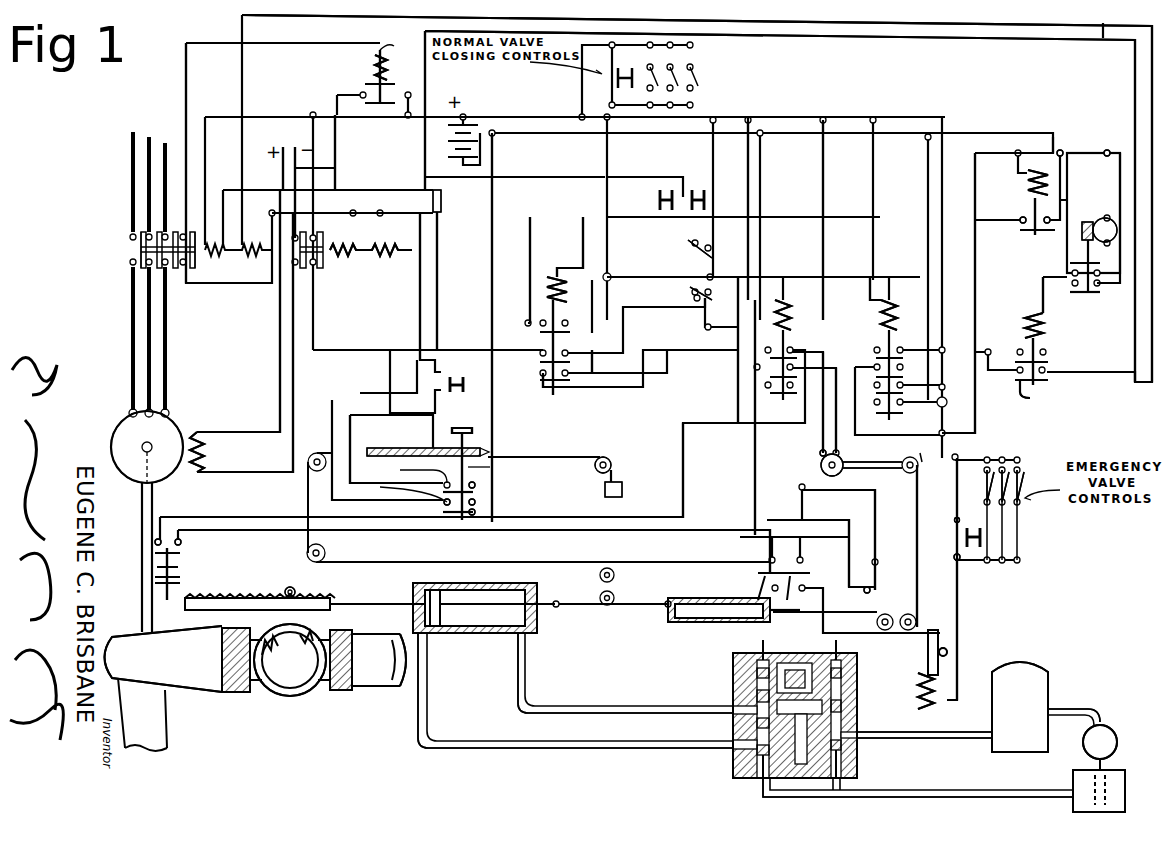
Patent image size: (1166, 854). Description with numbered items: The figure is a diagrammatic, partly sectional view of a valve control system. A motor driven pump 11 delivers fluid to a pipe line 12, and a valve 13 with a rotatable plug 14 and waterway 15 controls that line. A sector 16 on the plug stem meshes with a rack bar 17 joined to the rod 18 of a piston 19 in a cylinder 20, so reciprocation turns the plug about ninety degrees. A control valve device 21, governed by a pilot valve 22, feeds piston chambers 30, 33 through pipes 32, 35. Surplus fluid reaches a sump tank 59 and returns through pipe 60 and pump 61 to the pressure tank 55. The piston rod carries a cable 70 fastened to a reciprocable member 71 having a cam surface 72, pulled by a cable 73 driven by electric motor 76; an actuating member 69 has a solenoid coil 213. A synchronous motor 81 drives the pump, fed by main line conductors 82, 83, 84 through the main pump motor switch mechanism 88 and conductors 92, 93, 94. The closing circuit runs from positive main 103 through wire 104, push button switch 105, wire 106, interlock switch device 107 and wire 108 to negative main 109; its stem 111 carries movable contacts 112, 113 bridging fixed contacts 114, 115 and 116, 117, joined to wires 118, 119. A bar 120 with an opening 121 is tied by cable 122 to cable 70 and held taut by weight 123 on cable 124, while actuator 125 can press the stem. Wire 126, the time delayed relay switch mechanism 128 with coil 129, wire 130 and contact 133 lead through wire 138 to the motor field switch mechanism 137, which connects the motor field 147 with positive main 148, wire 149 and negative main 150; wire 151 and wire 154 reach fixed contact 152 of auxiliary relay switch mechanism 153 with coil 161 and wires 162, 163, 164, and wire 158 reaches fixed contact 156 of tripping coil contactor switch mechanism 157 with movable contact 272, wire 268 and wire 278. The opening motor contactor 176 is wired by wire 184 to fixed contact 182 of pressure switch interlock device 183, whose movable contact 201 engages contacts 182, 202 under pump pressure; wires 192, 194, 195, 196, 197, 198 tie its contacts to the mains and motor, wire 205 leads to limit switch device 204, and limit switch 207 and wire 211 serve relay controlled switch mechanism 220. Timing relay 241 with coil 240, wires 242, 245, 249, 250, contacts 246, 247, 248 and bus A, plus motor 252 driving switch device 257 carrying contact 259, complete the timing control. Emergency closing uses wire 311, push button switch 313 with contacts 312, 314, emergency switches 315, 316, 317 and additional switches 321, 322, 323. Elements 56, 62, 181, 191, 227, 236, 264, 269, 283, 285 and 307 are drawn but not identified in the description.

The motor driven pump 11 is at (164, 659).
The pipe line 12 is at (375, 692).
The valve 13 is at (243, 692).
The rotatable plug 14 is at (325, 692).
The waterway 15 is at (280, 695).
The sector 16 is at (268, 600).
The rack bar 17 is at (228, 600).
The rod 18 is at (337, 603).
The piston 19 is at (436, 633).
The cylinder 20 is at (537, 592).
The control valve device 21 is at (733, 677).
The pilot valve 22 is at (855, 690).
The piston chamber 30 is at (490, 633).
The pipe 32 is at (522, 683).
The piston chamber 33 is at (410, 600).
The pipe 35 is at (427, 728).
The pressure tank 55 is at (1020, 707).
The supply line 56 is at (905, 739).
The sump tank 59 is at (1073, 778).
The pipe 60 is at (1072, 709).
The pump 61 is at (1083, 742).
The return line 62 is at (965, 790).
The actuating member 69 is at (932, 630).
The cable 70 is at (583, 606).
The reciprocable member 71 is at (690, 597).
The cam surface 72 is at (680, 622).
The cable 73 is at (917, 548).
The electric motor 76 is at (821, 463).
The synchronous motor 81 is at (128, 425).
The main line conductor 82 is at (131, 137).
The main line conductor 83 is at (147, 165).
The main line conductor 84 is at (163, 196).
The main pump motor switch mechanism 88 is at (222, 270).
The conductor 92 is at (131, 302).
The conductor 93 is at (147, 340).
The conductor 94 is at (167, 375).
The positive main 103 is at (205, 128).
The wire 104 is at (440, 235).
The push button switch 105 is at (462, 394).
The wire 106 is at (350, 432).
The interlock switch device 107 is at (490, 467).
The wire 108 is at (490, 268).
The negative main 109 is at (480, 117).
The manually operable stem 111 is at (478, 480).
The movable contact 112 is at (475, 503).
The movable contact 113 is at (450, 520).
The fixed contact 114 is at (433, 472).
The fixed contact 115 is at (475, 487).
The fixed contact 116 is at (405, 480).
The fixed contact 117 is at (466, 520).
The wire 118 is at (515, 177).
The wire 119 is at (476, 520).
The bar 120 is at (432, 448).
The opening 121 is at (478, 452).
The cable 122 is at (308, 491).
The weight 123 is at (622, 490).
The cable 124 is at (598, 457).
The actuator 125 is at (473, 430).
The wire 126 is at (458, 215).
The time delayed relay switch mechanism 128 is at (390, 63).
The time delayed solenoid coil 129 is at (374, 62).
The wire 130 is at (186, 72).
The contact 133 is at (362, 92).
The motor field switch mechanism 137 is at (370, 262).
The wire 138 is at (337, 130).
The motor field 147 is at (205, 448).
The positive main 148 is at (280, 165).
The wire 149 is at (293, 375).
The negative main 150 is at (336, 168).
The wire 151 is at (313, 128).
The fixed contact 152 is at (540, 357).
The auxiliary relay switch mechanism 153 is at (560, 296).
The wire 154 is at (317, 325).
The fixed contact 156 is at (1044, 347).
The tripping coil contactor switch mechanism 157 is at (1045, 322).
The wire 158 is at (427, 78).
The solenoid coil 161 is at (548, 278).
The wire 162 is at (510, 293).
The wire 163 is at (608, 200).
The wire 164 is at (583, 262).
The relay controlled switch mechanism 176 is at (805, 315).
The conductor 181 is at (597, 351).
The fixed contact 182 is at (155, 542).
The pressure switch interlock device 183 is at (155, 575).
The wire 184 is at (172, 517).
The conductor 191 is at (598, 387).
The wire 192 is at (825, 152).
The wire 194 is at (755, 475).
The wire 195 is at (826, 352).
The wire 196 is at (838, 366).
The wire 197 is at (750, 188).
The wire 198 is at (820, 443).
The movable contact 201 is at (172, 560).
The fixed contact 202 is at (181, 542).
The limit switch device 204 is at (870, 588).
The wire 205 is at (268, 532).
The limit switch 207 is at (790, 573).
The wire 211 is at (767, 520).
The coil 213 is at (918, 700).
The relay controlled switch mechanism 220 is at (890, 290).
The conductor 227 is at (625, 277).
The cable 236 is at (845, 458).
The solenoid coil 240 is at (1026, 180).
The timing relay 241 is at (1030, 205).
The wire 242 is at (975, 205).
The wire 245 is at (1005, 140).
The contact 246 is at (1035, 240).
The fixed contact 247 is at (1020, 230).
The fixed contact 248 is at (1047, 235).
The wire 249 is at (530, 218).
The wire 250 is at (1068, 153).
The motor 252 is at (1100, 215).
The switch device 257 is at (1095, 220).
The contact 259 is at (1085, 320).
The conductor 264 is at (1100, 285).
The wire 268 is at (1040, 302).
The terminal 269 is at (1108, 153).
The movable contact 272 is at (1041, 398).
The wire 278 is at (240, 30).
The switch 283 is at (692, 292).
The conductor 285 is at (738, 365).
The pivot 307 is at (947, 650).
The wire 311 is at (952, 590).
The contact 312 is at (955, 520).
The push button switch 313 is at (967, 537).
The contact 314 is at (955, 557).
The emergency switch 315 is at (990, 475).
The emergency switch 316 is at (1017, 478).
The emergency switch 317 is at (1017, 500).
The additional switch 321 is at (660, 200).
The additional switch 322 is at (700, 188).
The additional switch 323 is at (690, 247).
The bus A is at (975, 160).